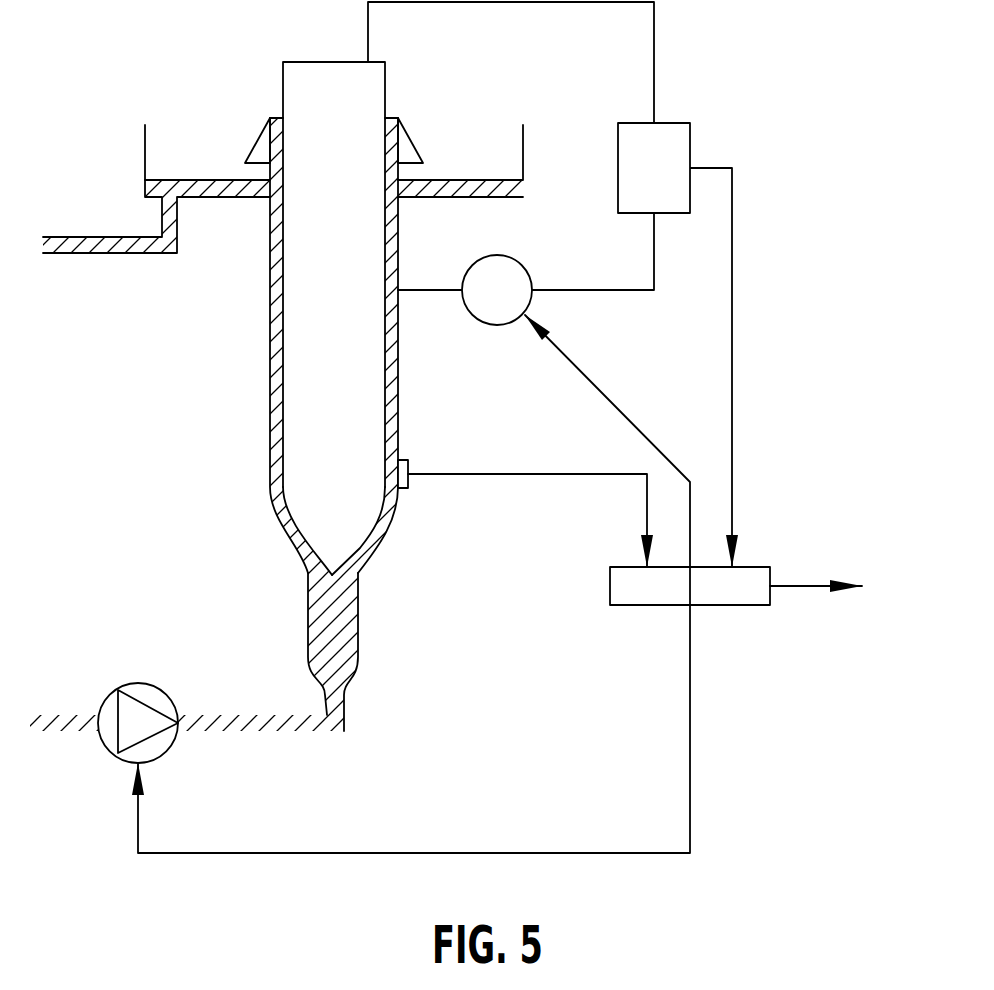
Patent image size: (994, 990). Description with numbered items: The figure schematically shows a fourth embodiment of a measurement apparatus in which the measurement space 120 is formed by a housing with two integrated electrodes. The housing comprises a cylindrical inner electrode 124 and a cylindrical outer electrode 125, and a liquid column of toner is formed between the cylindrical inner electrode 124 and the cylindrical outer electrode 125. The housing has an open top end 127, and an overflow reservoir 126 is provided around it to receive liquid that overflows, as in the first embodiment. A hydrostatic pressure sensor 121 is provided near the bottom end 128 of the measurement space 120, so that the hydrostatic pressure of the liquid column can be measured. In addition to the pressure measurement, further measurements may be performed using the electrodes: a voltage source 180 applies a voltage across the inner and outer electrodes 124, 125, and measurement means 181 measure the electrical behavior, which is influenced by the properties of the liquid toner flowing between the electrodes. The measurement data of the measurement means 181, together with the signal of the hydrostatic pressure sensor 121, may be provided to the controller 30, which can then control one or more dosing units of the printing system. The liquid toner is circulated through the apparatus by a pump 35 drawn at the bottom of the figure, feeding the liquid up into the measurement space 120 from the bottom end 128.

The controller 30 is at (747, 605).
The pump 35 is at (110, 737).
The measurement space 120 is at (292, 376).
The hydrostatic pressure sensor 121 is at (428, 452).
The cylindrical inner electrode 124 is at (285, 393).
The cylindrical outer electrode 125 is at (270, 366).
The overflow reservoir 126 is at (145, 153).
The open top end 127 is at (278, 117).
The bottom end 128 is at (388, 553).
The voltage source 180 is at (522, 265).
The measurement means 181 is at (690, 138).